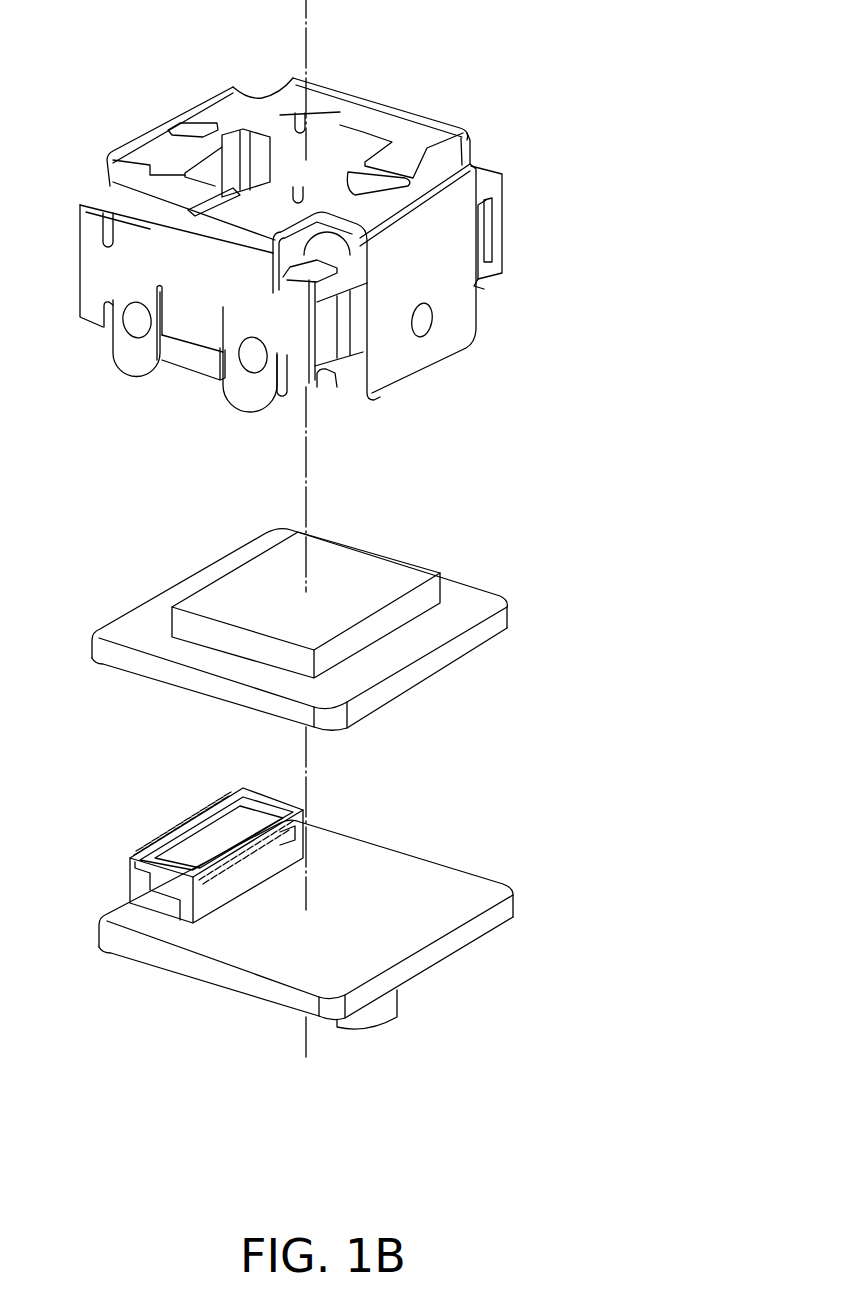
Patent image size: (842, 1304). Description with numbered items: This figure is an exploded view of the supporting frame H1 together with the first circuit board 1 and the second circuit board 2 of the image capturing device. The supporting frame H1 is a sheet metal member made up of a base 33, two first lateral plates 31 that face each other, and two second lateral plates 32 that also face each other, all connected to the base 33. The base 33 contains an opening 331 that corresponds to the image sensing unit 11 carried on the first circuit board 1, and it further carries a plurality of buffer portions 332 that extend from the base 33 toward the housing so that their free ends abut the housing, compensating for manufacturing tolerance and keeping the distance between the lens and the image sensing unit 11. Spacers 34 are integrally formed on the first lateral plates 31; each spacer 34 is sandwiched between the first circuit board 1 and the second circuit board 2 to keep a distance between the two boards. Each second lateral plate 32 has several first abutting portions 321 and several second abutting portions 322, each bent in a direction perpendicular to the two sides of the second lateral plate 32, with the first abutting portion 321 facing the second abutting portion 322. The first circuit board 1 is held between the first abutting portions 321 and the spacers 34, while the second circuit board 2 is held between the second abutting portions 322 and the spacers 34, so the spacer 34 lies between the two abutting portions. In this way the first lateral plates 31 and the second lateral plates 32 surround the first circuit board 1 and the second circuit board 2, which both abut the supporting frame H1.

The supporting frame H1 is at (478, 148).
The base 33 is at (313, 95).
The opening 331 is at (260, 98).
The buffer portion 332 is at (360, 110).
The second lateral plate 32 is at (100, 273).
The first abutting portion 321 is at (310, 267).
The second abutting portion 322 is at (322, 372).
The spacer 34 is at (490, 228).
The first lateral plate 31 is at (455, 342).
The first circuit board 1 is at (458, 630).
The image sensing unit 11 is at (372, 560).
The second circuit board 2 is at (425, 870).